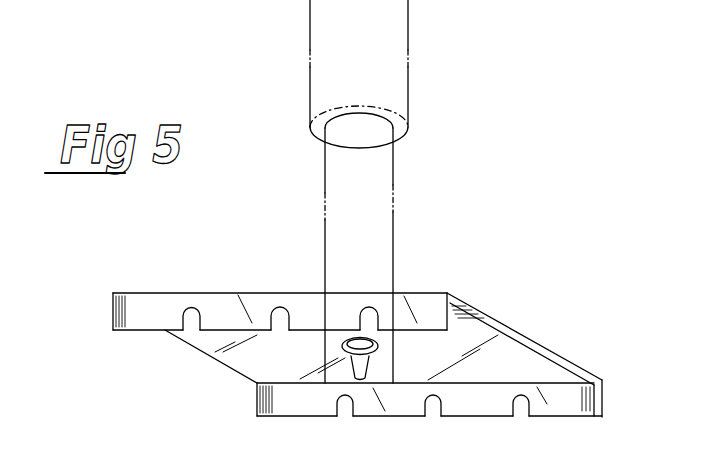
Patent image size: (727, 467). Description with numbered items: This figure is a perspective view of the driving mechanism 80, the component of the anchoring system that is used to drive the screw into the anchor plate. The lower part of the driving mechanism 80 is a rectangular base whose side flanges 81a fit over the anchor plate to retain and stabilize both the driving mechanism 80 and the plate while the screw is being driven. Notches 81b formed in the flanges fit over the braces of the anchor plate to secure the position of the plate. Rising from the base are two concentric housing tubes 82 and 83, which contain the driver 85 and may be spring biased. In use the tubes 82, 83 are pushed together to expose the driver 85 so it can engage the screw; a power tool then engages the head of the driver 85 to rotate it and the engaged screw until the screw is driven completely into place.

The driving mechanism 80 is at (410, 196).
The side flanges 81a is at (584, 418).
The notches 81b is at (522, 413).
The housing tube 82 is at (325, 228).
The housing tube 83 is at (310, 40).
The driver 85 is at (363, 376).